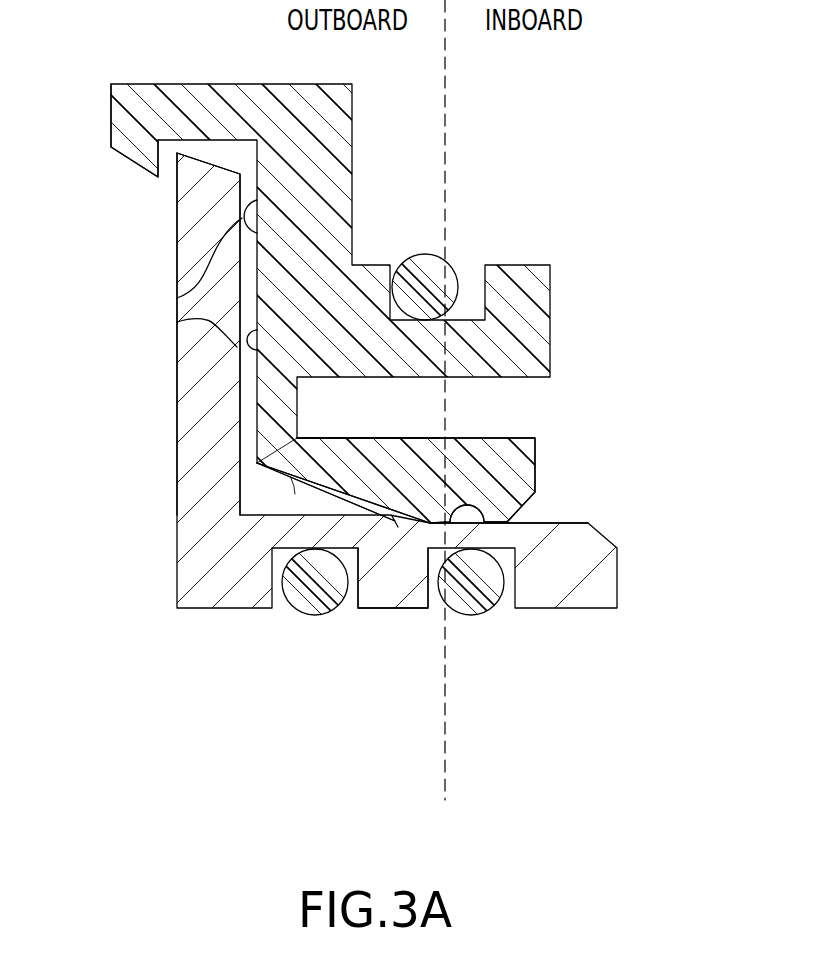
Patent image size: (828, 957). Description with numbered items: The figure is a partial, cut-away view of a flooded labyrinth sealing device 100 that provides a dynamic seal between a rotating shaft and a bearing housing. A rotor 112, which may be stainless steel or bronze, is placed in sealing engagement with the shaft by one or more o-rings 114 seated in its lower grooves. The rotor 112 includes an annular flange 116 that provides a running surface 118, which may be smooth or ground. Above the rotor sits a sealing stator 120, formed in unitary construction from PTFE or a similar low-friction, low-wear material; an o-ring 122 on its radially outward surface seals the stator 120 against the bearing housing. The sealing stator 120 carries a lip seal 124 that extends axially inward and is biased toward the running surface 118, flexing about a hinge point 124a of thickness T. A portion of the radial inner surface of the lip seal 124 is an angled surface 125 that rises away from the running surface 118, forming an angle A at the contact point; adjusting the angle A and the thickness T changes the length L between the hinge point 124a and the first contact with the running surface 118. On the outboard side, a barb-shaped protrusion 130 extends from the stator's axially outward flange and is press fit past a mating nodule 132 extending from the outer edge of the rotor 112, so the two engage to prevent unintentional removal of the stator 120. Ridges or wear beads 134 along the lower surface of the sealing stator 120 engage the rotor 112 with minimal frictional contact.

The labyrinth sealing device 100 is at (518, 106).
The rotor 112 is at (597, 573).
The o-rings 114 is at (318, 613).
The annular flange 116 is at (392, 607).
The running surface 118 is at (575, 523).
The sealing stator 120 is at (320, 149).
The o-ring 122 is at (418, 256).
The lip seal 124 is at (508, 468).
The hinge point 124a is at (297, 437).
The angled surface 125 is at (328, 488).
The protrusion 130 is at (158, 177).
The mating nodule 132 is at (186, 177).
The wear beads 134 is at (176, 302).
The thickness T is at (292, 440).
The angle A is at (291, 489).
The length L is at (268, 485).